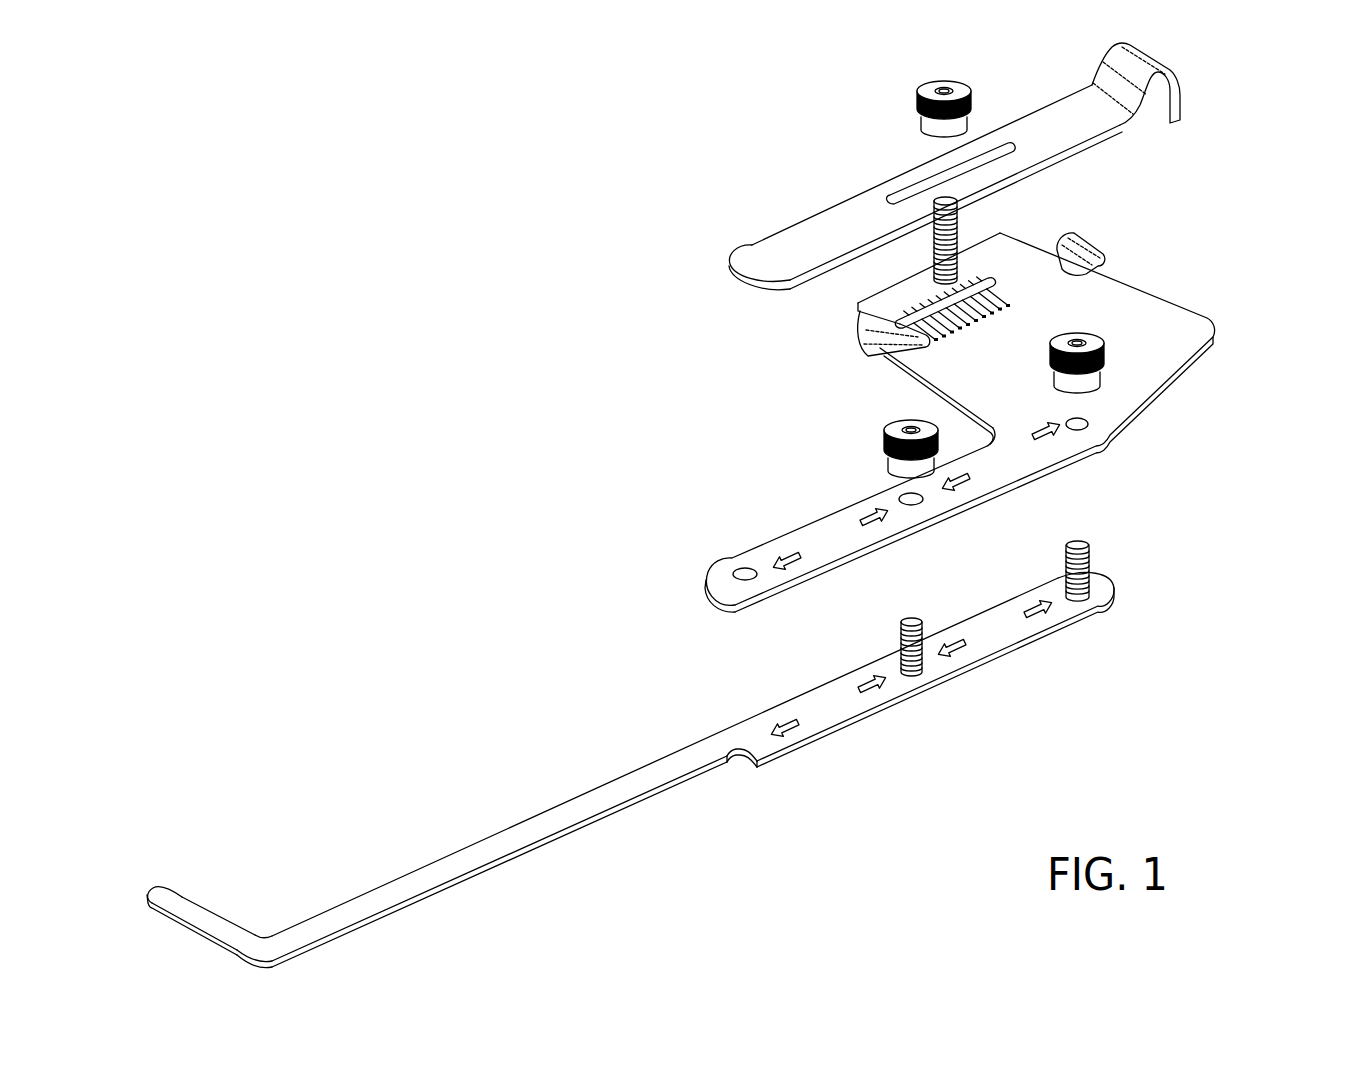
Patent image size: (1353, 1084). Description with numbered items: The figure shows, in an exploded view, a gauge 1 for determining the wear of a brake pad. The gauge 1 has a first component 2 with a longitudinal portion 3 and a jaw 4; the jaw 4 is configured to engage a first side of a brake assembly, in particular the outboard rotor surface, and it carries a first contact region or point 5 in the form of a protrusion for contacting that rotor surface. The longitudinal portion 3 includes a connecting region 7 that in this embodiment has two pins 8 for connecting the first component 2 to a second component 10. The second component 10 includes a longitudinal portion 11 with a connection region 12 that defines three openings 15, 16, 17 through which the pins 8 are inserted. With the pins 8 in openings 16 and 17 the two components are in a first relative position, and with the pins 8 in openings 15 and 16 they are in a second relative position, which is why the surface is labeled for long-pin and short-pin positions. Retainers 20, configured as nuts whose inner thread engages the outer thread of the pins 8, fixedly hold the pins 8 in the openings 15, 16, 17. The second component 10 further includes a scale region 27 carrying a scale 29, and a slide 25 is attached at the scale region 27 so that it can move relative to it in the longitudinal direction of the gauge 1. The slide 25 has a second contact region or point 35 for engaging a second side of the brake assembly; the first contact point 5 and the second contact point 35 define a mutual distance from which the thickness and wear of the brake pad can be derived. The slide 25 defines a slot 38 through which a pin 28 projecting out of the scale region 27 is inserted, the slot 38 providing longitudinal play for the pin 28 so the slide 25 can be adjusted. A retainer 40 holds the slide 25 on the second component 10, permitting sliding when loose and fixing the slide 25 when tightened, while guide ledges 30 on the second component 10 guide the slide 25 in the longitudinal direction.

The gauge 1 is at (406, 263).
The first component 2 is at (635, 823).
The longitudinal portion 3 is at (722, 768).
The jaw 4 is at (207, 908).
The first contact region/point 5 is at (177, 888).
The connecting region 7 is at (1005, 655).
The pins 8 is at (917, 671).
The second component 10 is at (892, 380).
The longitudinal portion 11 is at (1110, 451).
The connection region 12 is at (850, 503).
The opening 15 is at (735, 572).
The opening 16 is at (897, 493).
The opening 17 is at (1092, 428).
The retainers 20 is at (883, 445).
The slide 25 is at (793, 236).
The scale region 27 is at (883, 308).
The pin 28 is at (963, 215).
The scale 29 is at (1025, 300).
The guide ledges 30 is at (868, 338).
The second contact region/point 35 is at (735, 277).
The slot 38 is at (897, 193).
The retainer 40 is at (920, 108).